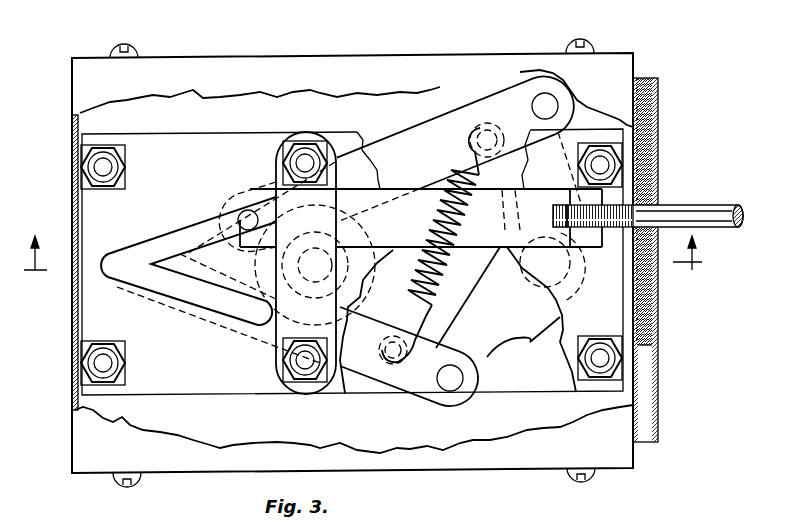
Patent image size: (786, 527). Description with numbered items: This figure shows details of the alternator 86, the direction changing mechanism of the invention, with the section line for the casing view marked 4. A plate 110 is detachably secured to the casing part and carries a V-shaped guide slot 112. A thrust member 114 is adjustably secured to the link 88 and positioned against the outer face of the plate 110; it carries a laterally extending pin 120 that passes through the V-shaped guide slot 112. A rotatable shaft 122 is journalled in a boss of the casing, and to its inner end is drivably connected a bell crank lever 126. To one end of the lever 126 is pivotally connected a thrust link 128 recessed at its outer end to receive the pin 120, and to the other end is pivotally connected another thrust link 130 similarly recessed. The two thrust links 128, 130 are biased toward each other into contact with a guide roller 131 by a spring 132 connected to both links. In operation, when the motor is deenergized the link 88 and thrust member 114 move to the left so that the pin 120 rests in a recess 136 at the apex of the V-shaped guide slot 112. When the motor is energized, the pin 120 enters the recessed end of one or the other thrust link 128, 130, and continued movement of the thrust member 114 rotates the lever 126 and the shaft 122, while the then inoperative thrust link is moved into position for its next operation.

The alternator 86 is at (480, 48).
The link 88 is at (687, 204).
The plate 110 is at (215, 390).
The V-shaped guide slot 112 is at (138, 258).
The thrust member 114 is at (423, 197).
The pin 120 is at (258, 195).
The rotatable shaft 122 is at (557, 300).
The bell crank lever 126 is at (490, 357).
The thrust link 128 is at (440, 397).
The thrust link 130 is at (441, 123).
The guide roller 131 is at (363, 293).
The spring 132 is at (438, 267).
The recess 136 is at (107, 278).
The section line 4- 4 is at (363, 270).